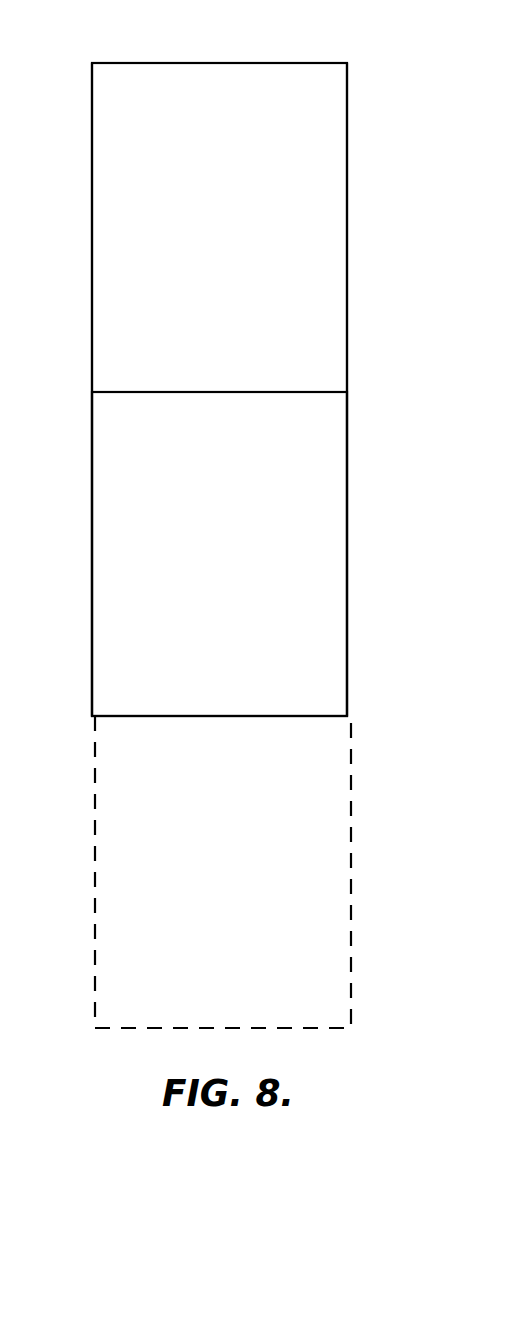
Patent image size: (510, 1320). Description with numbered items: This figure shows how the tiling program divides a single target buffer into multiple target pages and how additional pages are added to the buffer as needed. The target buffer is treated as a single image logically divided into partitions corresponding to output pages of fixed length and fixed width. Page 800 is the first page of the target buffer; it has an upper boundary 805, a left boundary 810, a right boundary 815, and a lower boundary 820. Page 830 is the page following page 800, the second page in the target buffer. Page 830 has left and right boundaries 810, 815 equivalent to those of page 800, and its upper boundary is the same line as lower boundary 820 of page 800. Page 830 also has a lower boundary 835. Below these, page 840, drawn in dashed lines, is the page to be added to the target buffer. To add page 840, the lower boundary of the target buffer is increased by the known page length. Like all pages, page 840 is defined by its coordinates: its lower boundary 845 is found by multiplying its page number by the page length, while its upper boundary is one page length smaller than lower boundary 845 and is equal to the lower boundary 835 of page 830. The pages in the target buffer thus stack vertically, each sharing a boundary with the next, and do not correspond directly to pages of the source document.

The page 800 is at (136, 64).
The upper boundary 805 is at (238, 64).
The left boundary 810 is at (92, 227).
The right boundary 815 is at (347, 227).
The lower boundary 820 is at (226, 391).
The page 830 is at (91, 466).
The lower boundary 835 is at (240, 715).
The page 840 is at (94, 772).
The lower boundary 845 is at (244, 1026).